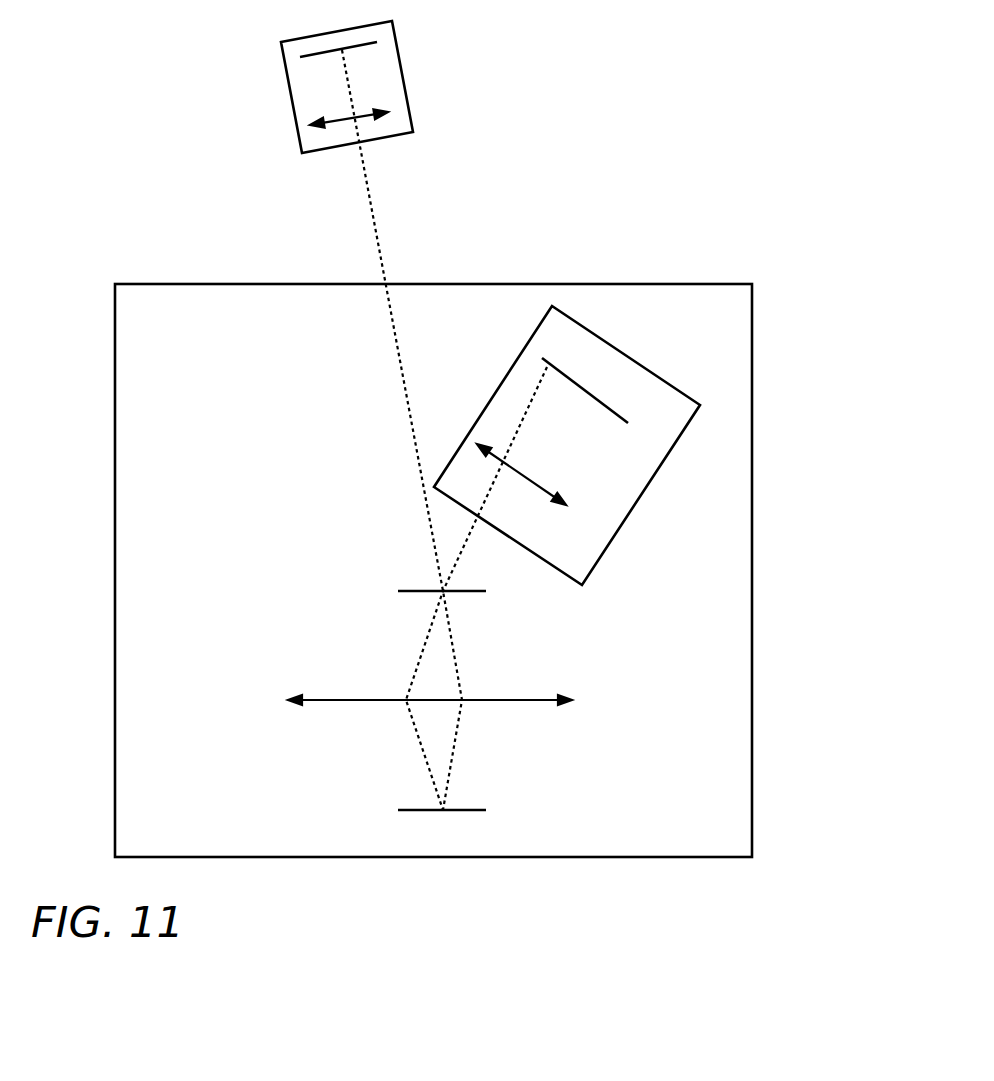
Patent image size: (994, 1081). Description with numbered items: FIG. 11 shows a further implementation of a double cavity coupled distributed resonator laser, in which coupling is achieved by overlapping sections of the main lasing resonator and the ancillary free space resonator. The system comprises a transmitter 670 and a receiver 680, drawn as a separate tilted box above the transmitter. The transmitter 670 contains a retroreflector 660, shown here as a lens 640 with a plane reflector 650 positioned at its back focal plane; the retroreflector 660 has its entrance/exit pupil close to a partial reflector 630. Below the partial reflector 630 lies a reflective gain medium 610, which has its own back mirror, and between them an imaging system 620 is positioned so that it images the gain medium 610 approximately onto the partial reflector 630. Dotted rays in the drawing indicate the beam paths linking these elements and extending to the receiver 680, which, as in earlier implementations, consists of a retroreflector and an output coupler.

The reflective gain medium 610 is at (398, 810).
The imaging system 620 is at (322, 698).
The partial reflector 630 is at (398, 590).
The lens 640 is at (567, 507).
The plane reflector 650 is at (628, 423).
The retroreflector 660 is at (617, 540).
The transmitter 670 is at (752, 752).
The receiver 680 is at (407, 85).